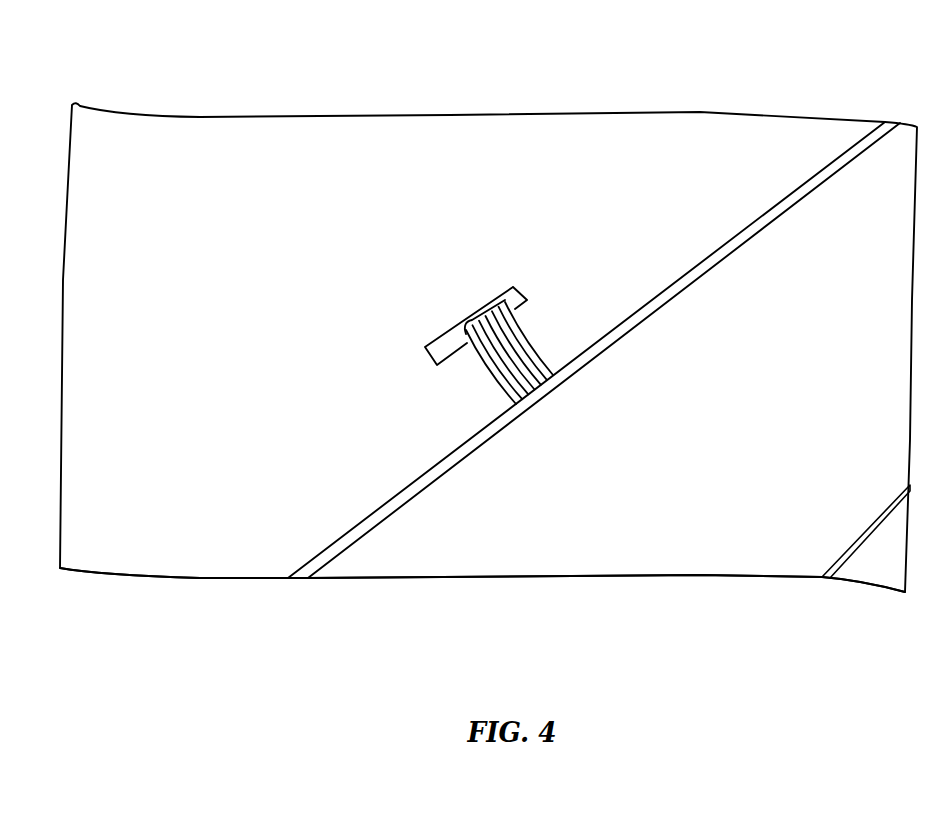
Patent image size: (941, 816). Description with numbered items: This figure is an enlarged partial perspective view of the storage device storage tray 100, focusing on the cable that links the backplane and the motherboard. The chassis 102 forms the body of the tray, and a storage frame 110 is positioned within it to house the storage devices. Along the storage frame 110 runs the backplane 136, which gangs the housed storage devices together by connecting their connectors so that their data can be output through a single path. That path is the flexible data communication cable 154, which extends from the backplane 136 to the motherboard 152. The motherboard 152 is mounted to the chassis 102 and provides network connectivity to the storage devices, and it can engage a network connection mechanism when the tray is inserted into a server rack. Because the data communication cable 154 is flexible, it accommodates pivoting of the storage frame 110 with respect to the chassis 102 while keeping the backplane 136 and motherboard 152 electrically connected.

The storage device storage tray 100 is at (488, 324).
The chassis 102 is at (228, 127).
The storage frame 110 is at (583, 572).
The backplane 136 is at (752, 228).
The motherboard 152 is at (450, 342).
The data communication cable 154 is at (528, 382).